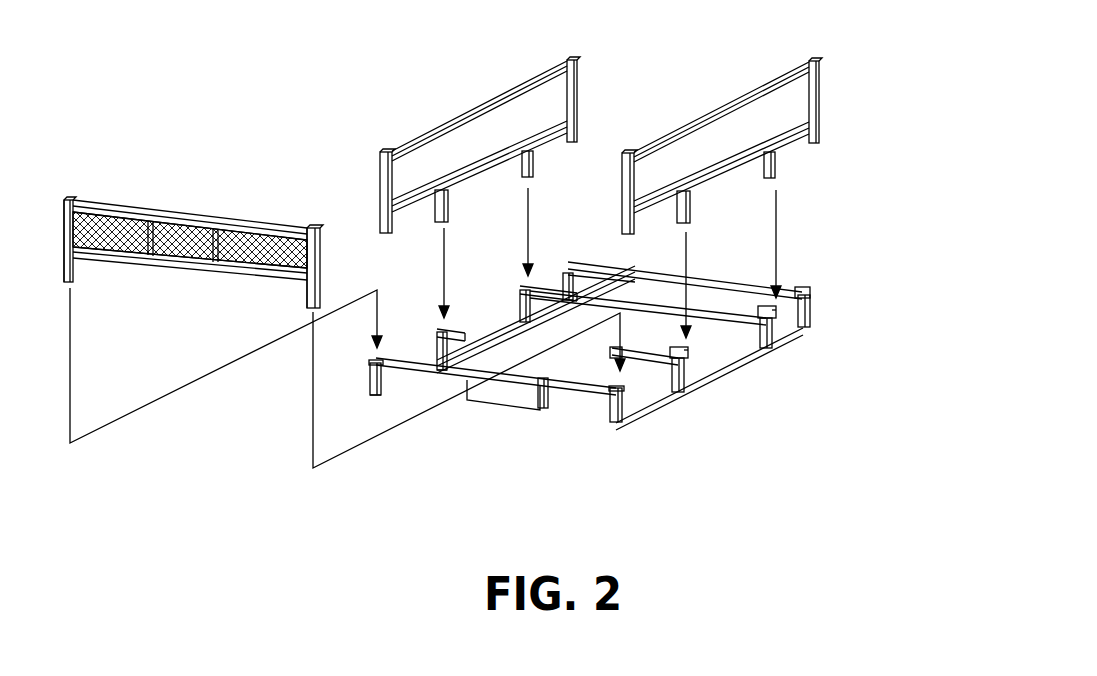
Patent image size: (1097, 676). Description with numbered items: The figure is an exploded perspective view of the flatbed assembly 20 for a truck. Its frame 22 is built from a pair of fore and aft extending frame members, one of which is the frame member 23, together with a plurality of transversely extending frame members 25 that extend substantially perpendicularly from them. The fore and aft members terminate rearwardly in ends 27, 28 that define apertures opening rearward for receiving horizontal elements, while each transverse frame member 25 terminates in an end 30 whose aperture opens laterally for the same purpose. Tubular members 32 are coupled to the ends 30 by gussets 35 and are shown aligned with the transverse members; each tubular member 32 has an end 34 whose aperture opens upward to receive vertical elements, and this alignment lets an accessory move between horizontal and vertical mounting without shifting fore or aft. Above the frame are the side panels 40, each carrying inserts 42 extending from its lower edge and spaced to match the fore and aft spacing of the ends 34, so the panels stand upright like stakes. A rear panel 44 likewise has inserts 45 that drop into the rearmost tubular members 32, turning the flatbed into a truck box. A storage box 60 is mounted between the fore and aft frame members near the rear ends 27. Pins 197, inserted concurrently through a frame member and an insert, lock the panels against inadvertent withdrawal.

The flatbed assembly 20 is at (875, 214).
The frame 22 is at (613, 433).
The fore and aft extending frame member 23 is at (608, 288).
The transversely extending frame member 25 is at (463, 328).
The end 27 is at (441, 378).
The end 28 is at (544, 410).
The end 30 is at (808, 292).
The tubular member 32 is at (370, 378).
The end 34 is at (519, 288).
The gusset 35 is at (384, 398).
The side panel 40 is at (466, 100).
The insert 42 is at (535, 155).
The rear panel 44 is at (193, 203).
The insert 45 is at (74, 270).
The storage box 60 is at (487, 400).
The pin 197 is at (775, 310).